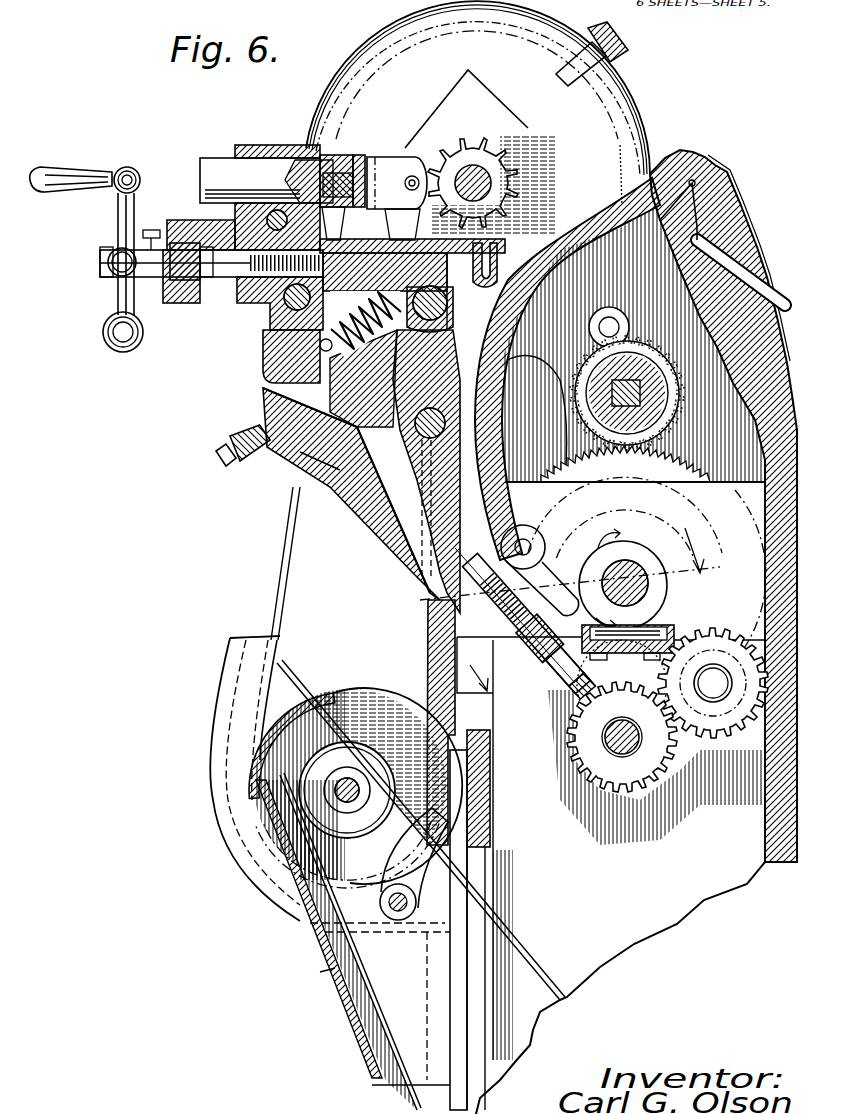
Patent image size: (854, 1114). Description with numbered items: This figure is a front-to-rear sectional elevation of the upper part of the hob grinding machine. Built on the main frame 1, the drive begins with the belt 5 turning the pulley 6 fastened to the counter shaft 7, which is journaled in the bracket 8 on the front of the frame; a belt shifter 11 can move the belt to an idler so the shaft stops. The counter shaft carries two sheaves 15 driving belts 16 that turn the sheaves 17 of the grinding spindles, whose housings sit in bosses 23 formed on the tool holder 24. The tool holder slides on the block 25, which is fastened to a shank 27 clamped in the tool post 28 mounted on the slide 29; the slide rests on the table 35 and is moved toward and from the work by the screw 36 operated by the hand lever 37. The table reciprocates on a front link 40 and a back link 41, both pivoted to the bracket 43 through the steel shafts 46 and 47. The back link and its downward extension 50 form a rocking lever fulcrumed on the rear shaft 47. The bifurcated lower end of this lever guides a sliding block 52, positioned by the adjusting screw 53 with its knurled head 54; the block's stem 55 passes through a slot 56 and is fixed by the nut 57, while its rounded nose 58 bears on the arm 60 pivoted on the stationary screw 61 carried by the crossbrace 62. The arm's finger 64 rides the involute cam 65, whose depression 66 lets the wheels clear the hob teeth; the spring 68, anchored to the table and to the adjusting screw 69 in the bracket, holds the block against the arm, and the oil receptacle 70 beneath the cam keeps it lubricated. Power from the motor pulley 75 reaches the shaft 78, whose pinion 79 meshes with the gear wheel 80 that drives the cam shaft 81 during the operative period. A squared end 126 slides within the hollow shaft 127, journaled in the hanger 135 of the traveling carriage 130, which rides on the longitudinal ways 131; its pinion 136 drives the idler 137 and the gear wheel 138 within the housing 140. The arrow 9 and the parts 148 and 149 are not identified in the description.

The main frame 1 is at (803, 370).
The belt 5 is at (527, 934).
The pulley 6 is at (360, 830).
The counter shaft 7 is at (507, 232).
The bracket 8 is at (502, 754).
The cutter spindle direction 9 is at (281, 183).
The belt shifter 11 is at (398, 913).
The sheaves 15 is at (358, 690).
The belts 16 is at (285, 552).
The sheaves 17 is at (376, 157).
The bosses 23 is at (392, 150).
The tool holder 24 is at (355, 158).
The block 25 is at (325, 160).
The shank 27 is at (203, 165).
The tool post 28 is at (240, 145).
The slide 29 is at (210, 222).
The table 35 is at (262, 302).
The screw 36 is at (222, 280).
The hand lever 37 is at (118, 215).
The front link 40 is at (280, 350).
The back link 41 is at (412, 360).
The bracket 43 is at (370, 500).
The steel shaft 46 is at (495, 290).
The rear shaft 47 is at (338, 470).
The downward extension 50 is at (395, 530).
The sliding block 52 is at (540, 580).
The adjusting screw 53 is at (445, 590).
The knurled head 54 is at (565, 695).
The stem 55 is at (520, 640).
The slot 56 is at (480, 612).
The nut 57 is at (550, 672).
The rounded nose 58 is at (472, 632).
The arm 60 is at (552, 555).
The screw 61 is at (527, 545).
The crossbrace 62 is at (593, 494).
The finger 64 is at (592, 565).
The cam 65 is at (688, 576).
The depression 66 is at (617, 542).
The spring 68 is at (338, 352).
The adjusting screw 69 is at (240, 462).
The oil receptacle 70 is at (680, 632).
The pulley 75 is at (656, 742).
The shaft 78 is at (640, 747).
The pinion 79 is at (620, 755).
The gear wheel 80 is at (673, 690).
The cam shaft 81 is at (633, 565).
The squared end 126 is at (640, 395).
The hollow shaft 127 is at (655, 378).
The traveling carriage 130 is at (563, 235).
The longitudinal ways 131 is at (508, 395).
The hanger 135 is at (673, 343).
The pinion 136 is at (660, 392).
The idler 137 is at (745, 266).
The gear wheel 138 is at (663, 165).
The housing 140 is at (609, 110).
The cutter 148 is at (504, 177).
The cutter guard 149 is at (507, 157).